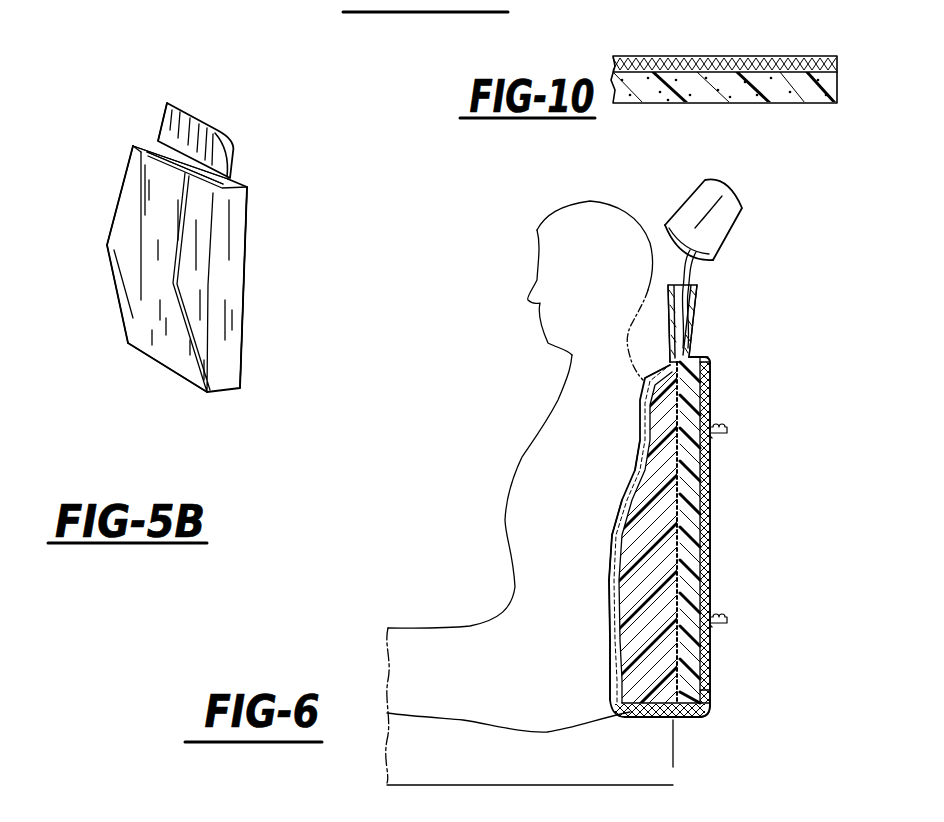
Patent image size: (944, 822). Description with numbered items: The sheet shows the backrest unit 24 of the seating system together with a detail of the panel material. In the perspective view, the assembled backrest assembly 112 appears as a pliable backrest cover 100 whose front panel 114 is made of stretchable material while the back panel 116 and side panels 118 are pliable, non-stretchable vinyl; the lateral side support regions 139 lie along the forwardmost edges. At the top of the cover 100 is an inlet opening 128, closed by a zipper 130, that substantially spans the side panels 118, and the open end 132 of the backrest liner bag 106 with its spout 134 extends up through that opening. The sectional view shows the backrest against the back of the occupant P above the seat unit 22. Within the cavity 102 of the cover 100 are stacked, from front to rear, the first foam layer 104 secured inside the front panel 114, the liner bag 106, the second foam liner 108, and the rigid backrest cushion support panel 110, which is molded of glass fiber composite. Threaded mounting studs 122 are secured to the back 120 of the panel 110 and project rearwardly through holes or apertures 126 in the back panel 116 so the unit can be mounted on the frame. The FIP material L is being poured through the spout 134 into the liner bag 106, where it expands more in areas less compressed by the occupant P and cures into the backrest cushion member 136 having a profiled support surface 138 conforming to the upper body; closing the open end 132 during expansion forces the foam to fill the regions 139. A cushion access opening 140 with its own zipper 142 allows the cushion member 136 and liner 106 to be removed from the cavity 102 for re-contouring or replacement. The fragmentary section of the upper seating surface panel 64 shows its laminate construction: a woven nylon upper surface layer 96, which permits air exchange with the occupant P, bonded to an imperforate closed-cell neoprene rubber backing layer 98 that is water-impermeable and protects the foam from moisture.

In FIG. 6, the seat unit 22 is at (667, 760).
In FIG. 5B, the backrest unit 24 is at (120, 149).
In FIG. 6, the backrest unit 24 is at (810, 331).
In FIG. 10, the upper seating surface panel 64 is at (807, 57).
In FIG. 10, the woven nylon upper surface layer 96 is at (678, 60).
In FIG. 10, the closed cell neoprene rubber backing layer 98 is at (702, 99).
In FIG. 5B, the backrest cushion bag or cover 100 is at (230, 222).
In FIG. 6, the backrest cushion bag or cover 100 is at (695, 710).
In FIG. 6, the cavity 102 is at (647, 700).
In FIG. 6, the first foam layer 104 is at (613, 682).
In FIG. 5B, the backrest liner bag 106 is at (229, 140).
In FIG. 6, the backrest liner bag 106 is at (612, 640).
In FIG. 6, the second foam liner 108 is at (690, 563).
In FIG. 6, the backrest cushion support panel 110 is at (711, 510).
In FIG. 5B, the backrest assembly 112 is at (117, 327).
In FIG. 5B, the front panel 114 is at (157, 350).
In FIG. 6, the front panel 114 is at (608, 597).
In FIG. 5B, the back panel 116 is at (255, 323).
In FIG. 6, the back panel 116 is at (712, 588).
In FIG. 5B, the side panels 118 is at (135, 143).
In FIG. 6, the back of the panel 120 is at (711, 667).
In FIG. 6, the threaded mounting studs 122 is at (728, 430).
In FIG. 6, the holes or apertures 126 is at (711, 437).
In FIG. 5B, the inlet opening 128 is at (187, 174).
In FIG. 6, the inlet opening 128 is at (690, 341).
In FIG. 5B, the zipper 130 is at (130, 156).
In FIG. 6, the zipper 130 is at (673, 363).
In FIG. 5B, the open end 132 is at (232, 176).
In FIG. 6, the open end 132 is at (690, 302).
In FIG. 5B, the spout 134 is at (208, 128).
In FIG. 6, the spout 134 is at (680, 278).
In FIG. 6, the backrest cushion member 136 is at (623, 517).
In FIG. 6, the profiled support surface 138 is at (643, 477).
In FIG. 5B, the lateral side support regions 139 is at (107, 278).
In FIG. 6, the cushion access opening 140 is at (711, 378).
In FIG. 6, the zipper 142 is at (711, 384).
In FIG. 6, the FIP material L is at (695, 266).
In FIG. 6, the occupant P is at (518, 460).